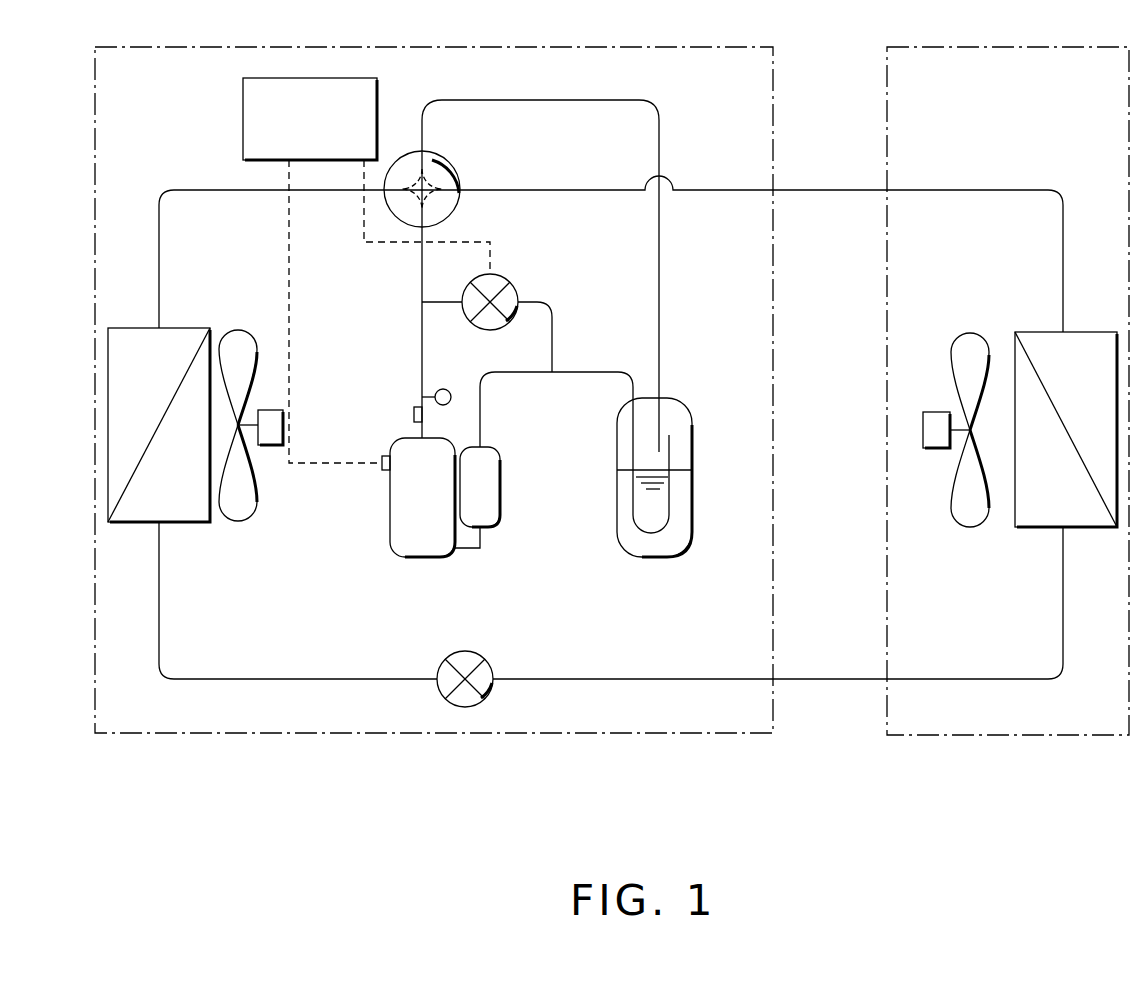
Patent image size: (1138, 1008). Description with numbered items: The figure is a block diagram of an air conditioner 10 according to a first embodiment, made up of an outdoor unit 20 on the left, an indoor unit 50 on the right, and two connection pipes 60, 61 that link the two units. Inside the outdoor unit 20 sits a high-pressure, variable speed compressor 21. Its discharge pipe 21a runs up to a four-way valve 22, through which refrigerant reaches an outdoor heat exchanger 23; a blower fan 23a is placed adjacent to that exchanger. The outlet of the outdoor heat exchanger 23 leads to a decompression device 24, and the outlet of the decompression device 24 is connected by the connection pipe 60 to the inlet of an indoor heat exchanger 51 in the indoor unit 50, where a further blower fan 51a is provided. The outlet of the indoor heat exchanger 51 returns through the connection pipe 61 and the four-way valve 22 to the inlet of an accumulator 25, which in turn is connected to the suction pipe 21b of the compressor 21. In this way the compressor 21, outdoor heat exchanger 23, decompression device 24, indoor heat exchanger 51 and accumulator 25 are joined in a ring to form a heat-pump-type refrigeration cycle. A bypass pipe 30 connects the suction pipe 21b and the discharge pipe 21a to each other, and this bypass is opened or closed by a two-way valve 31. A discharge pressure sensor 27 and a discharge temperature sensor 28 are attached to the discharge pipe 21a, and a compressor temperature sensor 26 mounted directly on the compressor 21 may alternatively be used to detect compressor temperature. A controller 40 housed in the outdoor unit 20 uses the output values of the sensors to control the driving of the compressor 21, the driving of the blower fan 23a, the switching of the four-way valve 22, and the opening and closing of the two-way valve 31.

The air conditioner 10 is at (598, 765).
The outdoor unit 20 is at (773, 75).
The compressor 21 is at (415, 557).
The discharge pipe 21a is at (422, 320).
The suction pipe 21b is at (480, 425).
The four-way valve 22 is at (392, 208).
The outdoor heat exchanger 23 is at (180, 522).
The blower fan 23a is at (240, 522).
The decompression device 24 is at (475, 656).
The accumulator 25 is at (692, 435).
The compressor temperature sensor 26 is at (382, 465).
The discharge pressure sensor 27 is at (452, 389).
The discharge temperature sensor 28 is at (414, 412).
The bypass pipe 30 is at (552, 338).
The two-way valve 31 is at (510, 283).
The controller 40 is at (243, 120).
The indoor unit 50 is at (887, 145).
The indoor heat exchanger 51 is at (1093, 527).
The blower fan 51a is at (955, 367).
The connection pipe 60 is at (825, 679).
The connection pipe 61 is at (827, 192).